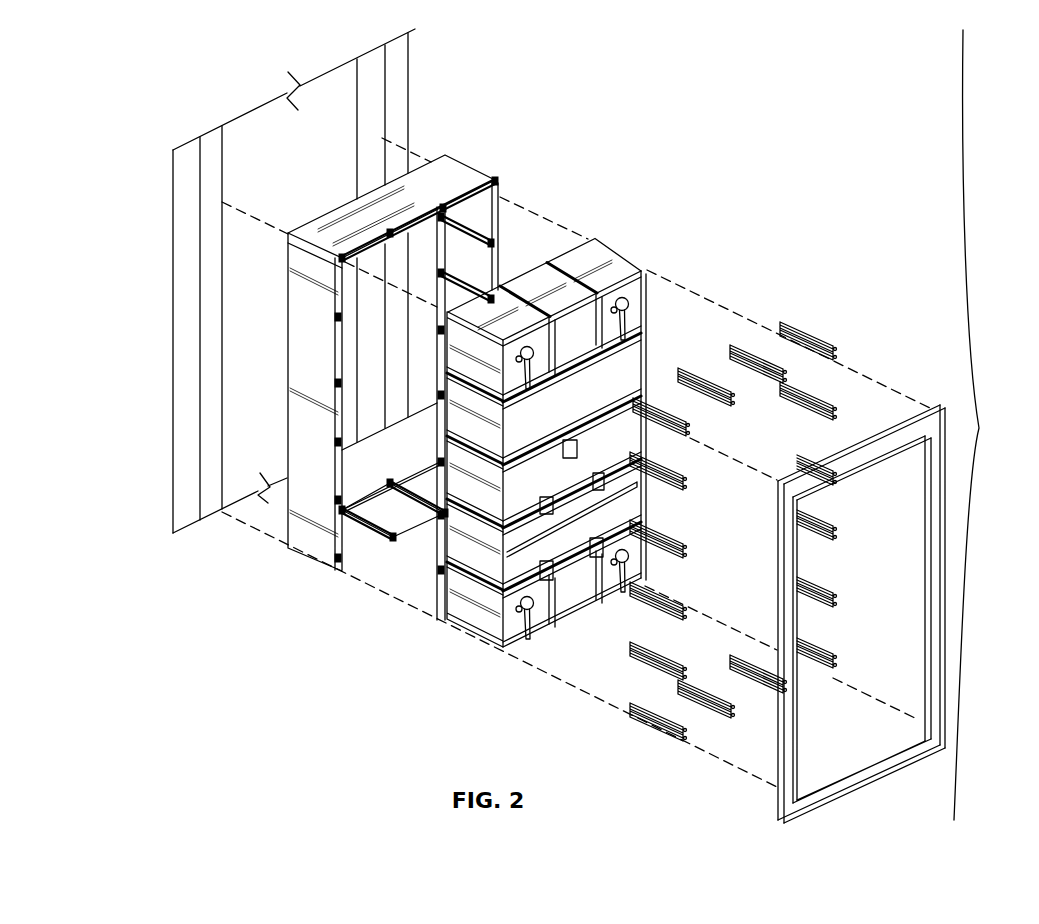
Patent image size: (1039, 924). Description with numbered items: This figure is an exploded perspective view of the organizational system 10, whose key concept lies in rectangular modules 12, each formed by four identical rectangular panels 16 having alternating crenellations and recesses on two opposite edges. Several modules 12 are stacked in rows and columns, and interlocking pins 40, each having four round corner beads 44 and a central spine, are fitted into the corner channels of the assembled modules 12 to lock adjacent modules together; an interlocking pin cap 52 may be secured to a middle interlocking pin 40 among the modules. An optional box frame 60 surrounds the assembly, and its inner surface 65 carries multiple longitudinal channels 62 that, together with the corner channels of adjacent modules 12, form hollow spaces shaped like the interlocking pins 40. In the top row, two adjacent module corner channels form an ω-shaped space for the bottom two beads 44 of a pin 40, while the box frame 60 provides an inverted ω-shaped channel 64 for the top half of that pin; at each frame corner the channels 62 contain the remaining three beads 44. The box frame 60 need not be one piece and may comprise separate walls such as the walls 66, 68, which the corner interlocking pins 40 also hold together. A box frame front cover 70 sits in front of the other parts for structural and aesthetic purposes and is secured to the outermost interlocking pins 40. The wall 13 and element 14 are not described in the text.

The organizational system 10 is at (982, 425).
The rectangular module 12 is at (574, 433).
The wall 13 is at (397, 97).
The shelf unit 14 is at (633, 370).
The rectangular panel 16 is at (608, 260).
The interlocking pin 40 is at (728, 521).
The corner bead 44 is at (687, 733).
The interlocking pin cap 52 is at (567, 452).
The box frame 60 is at (410, 381).
The longitudinal channel 62 is at (470, 232).
The inverted ω-shaped channel 64 is at (337, 497).
The inner surface 65 is at (410, 520).
The wall 66 is at (497, 220).
The wall 68 is at (350, 213).
The box frame front cover 70 is at (933, 405).